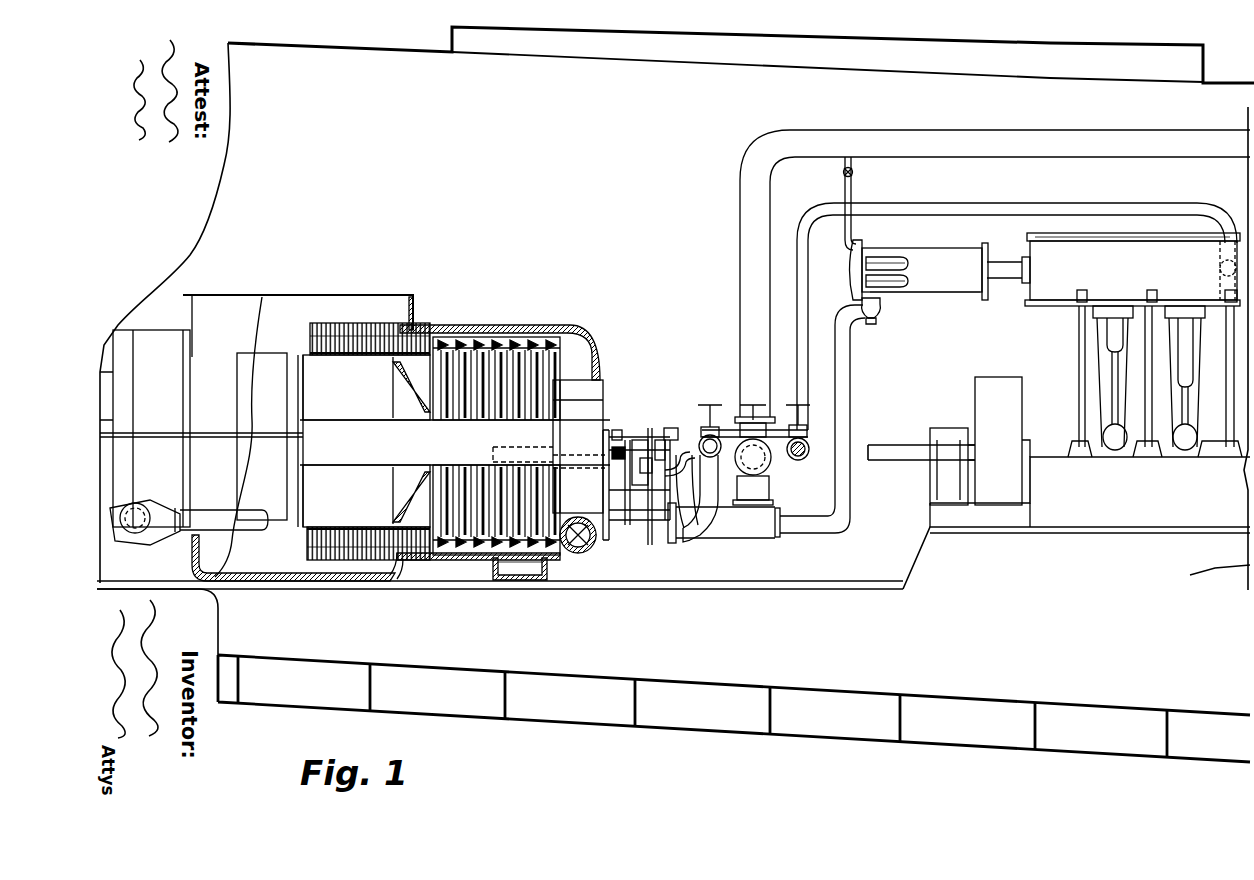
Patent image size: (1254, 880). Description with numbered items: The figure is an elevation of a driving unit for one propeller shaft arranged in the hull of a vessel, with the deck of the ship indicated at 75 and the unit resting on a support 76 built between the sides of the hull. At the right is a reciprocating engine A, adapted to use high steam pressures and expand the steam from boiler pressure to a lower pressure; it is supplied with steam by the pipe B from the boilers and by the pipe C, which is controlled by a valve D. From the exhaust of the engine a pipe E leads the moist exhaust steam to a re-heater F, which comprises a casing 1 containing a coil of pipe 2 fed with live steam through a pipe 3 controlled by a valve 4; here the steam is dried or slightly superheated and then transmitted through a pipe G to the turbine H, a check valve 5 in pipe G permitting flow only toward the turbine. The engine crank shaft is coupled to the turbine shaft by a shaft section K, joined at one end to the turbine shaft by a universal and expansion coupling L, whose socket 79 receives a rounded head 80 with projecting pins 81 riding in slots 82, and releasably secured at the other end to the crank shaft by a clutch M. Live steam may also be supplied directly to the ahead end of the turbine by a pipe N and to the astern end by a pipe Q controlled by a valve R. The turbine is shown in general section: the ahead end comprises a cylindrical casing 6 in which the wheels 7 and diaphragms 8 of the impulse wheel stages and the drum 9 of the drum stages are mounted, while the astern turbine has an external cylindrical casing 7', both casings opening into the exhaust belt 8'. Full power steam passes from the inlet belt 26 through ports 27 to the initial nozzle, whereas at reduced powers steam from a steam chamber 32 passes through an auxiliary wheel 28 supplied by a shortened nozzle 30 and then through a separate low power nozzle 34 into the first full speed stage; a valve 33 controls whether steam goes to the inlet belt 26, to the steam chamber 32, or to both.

The deck 75 is at (390, 52).
The support 76 is at (734, 708).
The casing 1 is at (963, 289).
The coil of pipe 2 is at (905, 262).
The pipe 3 is at (851, 193).
The valve 4 is at (854, 173).
The check valve 5 is at (875, 312).
The cylindrical casing 6 is at (472, 333).
The wheels 7 is at (455, 441).
The external cylindrical casing 7' is at (145, 428).
The diaphragms 8 is at (484, 449).
The exhaust belt 8' is at (297, 558).
The drum 9 is at (562, 600).
The inlet belt 26 is at (500, 575).
The ports 27 is at (510, 577).
The auxiliary wheel 28 is at (587, 548).
The nozzle 30 is at (575, 553).
The steam chamber 32 is at (600, 533).
The valve 33 is at (648, 466).
The low power nozzle 34 is at (513, 330).
The socket 79 is at (682, 430).
The rounded head 80 is at (684, 478).
The pins 81 is at (636, 445).
The slots 82 is at (668, 440).
The reciprocating engine A is at (1133, 345).
The pipe B is at (906, 144).
The pipe C is at (1017, 308).
The valve D is at (804, 432).
The pipe E is at (1008, 263).
The re-heater F is at (919, 270).
The pipe G is at (840, 392).
The turbine H is at (298, 422).
The shaft section K is at (895, 452).
The universal and expansion coupling L is at (640, 475).
The clutch M is at (1002, 441).
The pipe N is at (754, 455).
The pipe Q is at (748, 440).
The valve R is at (706, 432).